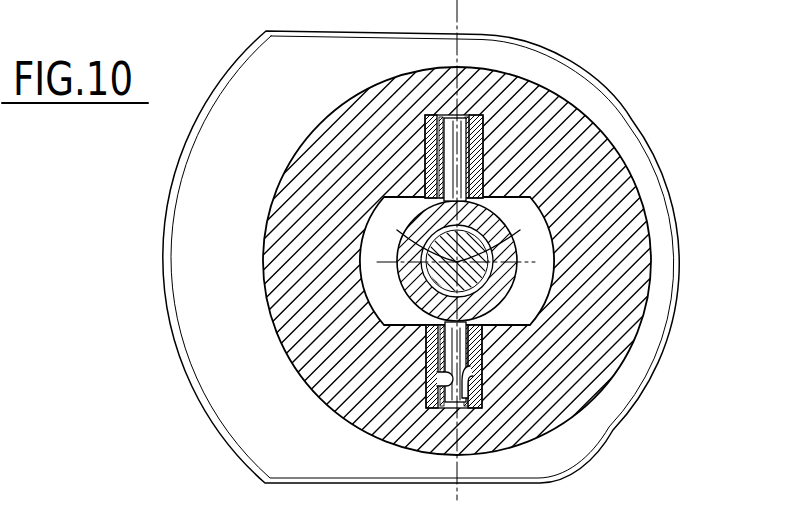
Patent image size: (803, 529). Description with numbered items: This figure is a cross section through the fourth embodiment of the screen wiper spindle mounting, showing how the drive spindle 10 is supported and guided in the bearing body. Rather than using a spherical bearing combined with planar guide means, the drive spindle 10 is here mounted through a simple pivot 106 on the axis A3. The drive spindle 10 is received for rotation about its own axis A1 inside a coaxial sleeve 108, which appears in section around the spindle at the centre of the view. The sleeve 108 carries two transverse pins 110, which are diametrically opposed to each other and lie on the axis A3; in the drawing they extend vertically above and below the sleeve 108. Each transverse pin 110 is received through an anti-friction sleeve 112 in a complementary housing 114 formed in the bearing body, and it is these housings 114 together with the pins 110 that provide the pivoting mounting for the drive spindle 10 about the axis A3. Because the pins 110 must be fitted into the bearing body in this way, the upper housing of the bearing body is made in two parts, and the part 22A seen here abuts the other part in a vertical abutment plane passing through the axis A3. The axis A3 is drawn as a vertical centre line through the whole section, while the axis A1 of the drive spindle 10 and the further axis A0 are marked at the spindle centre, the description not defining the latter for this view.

The upper housing part 22A is at (337, 143).
The transverse pin 110 is at (437, 117).
The pivot 106 is at (483, 125).
The coaxial sleeve 108 is at (500, 262).
The drive spindle 10 is at (443, 272).
The anti-friction sleeve 112 is at (462, 370).
The complementary housing 114 is at (430, 382).
The axis A0 is at (416, 233).
The axis of the spindle A1 is at (498, 233).
The pivot axis A3 is at (478, 250).